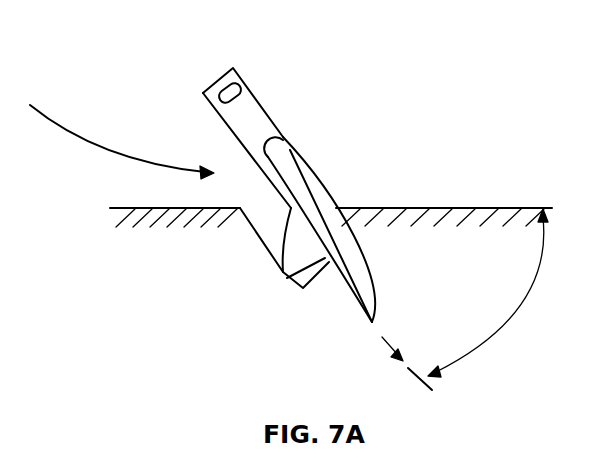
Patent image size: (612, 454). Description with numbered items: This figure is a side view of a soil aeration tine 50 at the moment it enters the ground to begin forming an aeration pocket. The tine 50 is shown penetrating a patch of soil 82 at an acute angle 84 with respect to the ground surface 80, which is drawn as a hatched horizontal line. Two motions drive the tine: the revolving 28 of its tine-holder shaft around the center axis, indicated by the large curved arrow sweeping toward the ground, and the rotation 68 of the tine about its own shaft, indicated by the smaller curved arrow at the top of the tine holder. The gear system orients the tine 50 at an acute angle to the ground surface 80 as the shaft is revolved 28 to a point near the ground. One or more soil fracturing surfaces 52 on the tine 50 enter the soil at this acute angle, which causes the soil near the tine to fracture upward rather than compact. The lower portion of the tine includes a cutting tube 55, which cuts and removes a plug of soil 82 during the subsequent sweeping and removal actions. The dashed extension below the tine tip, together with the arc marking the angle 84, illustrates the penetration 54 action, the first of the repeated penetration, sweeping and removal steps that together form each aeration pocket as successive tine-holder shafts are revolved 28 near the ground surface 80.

The rotation 68 is at (218, 15).
The soil aeration tine 50 is at (303, 147).
The soil fracturing surface 52 is at (368, 262).
The revolving 28 is at (93, 147).
The ground surface 80 is at (445, 208).
The soil 82 is at (201, 273).
The cutting tube 55 is at (297, 270).
The penetration action 54 is at (383, 337).
The acute angle 84 is at (520, 303).